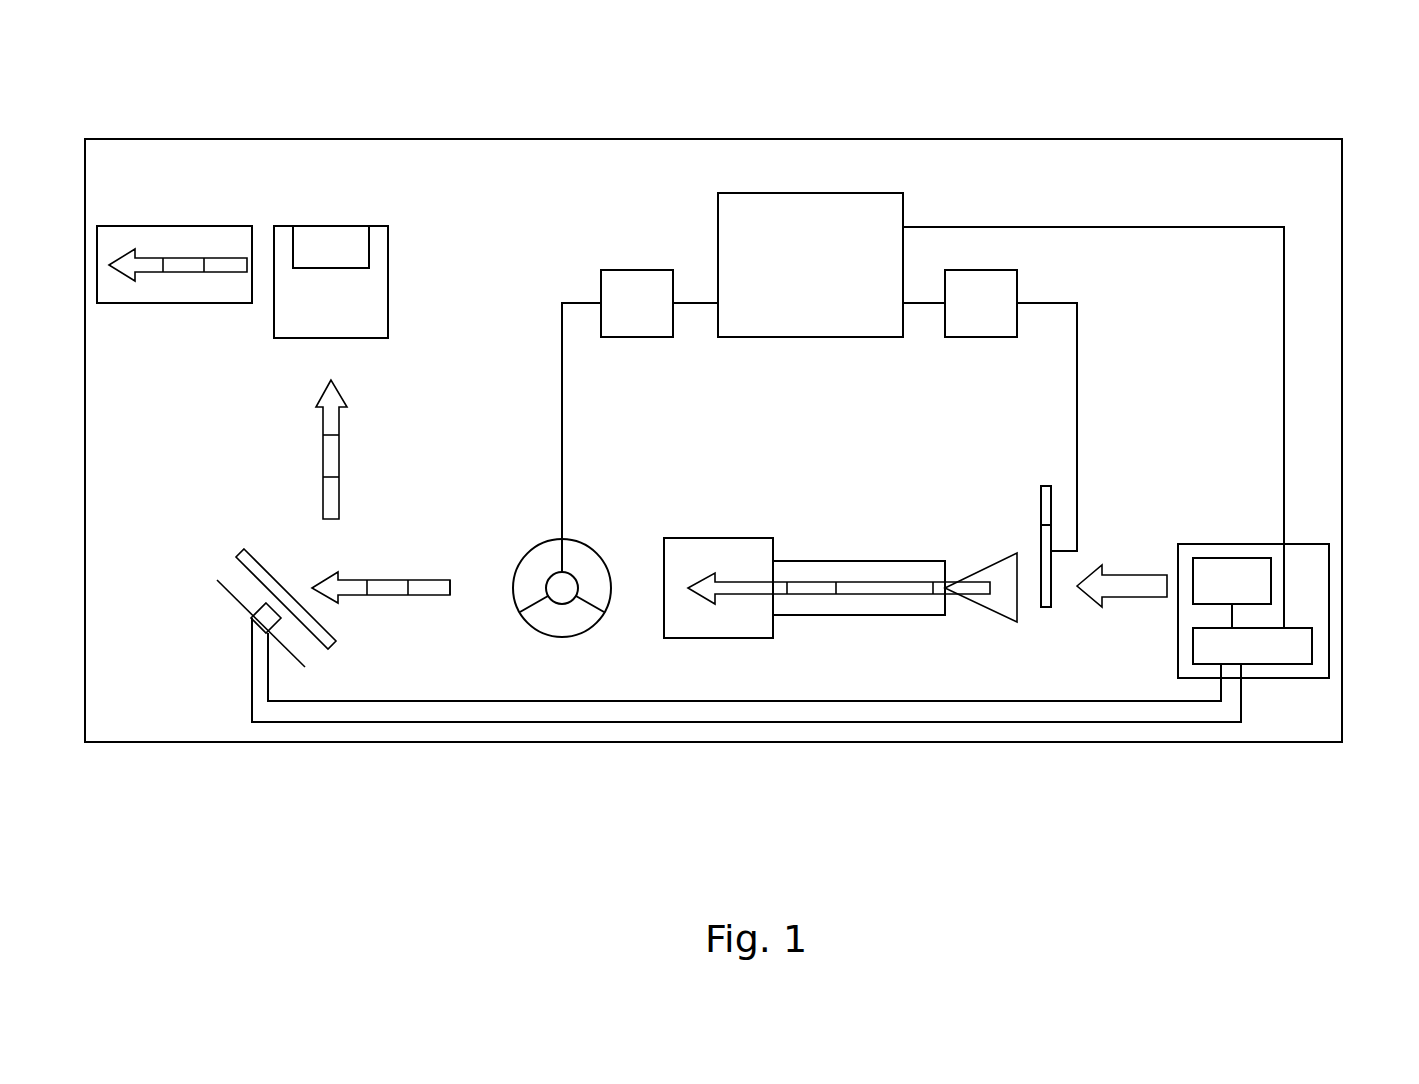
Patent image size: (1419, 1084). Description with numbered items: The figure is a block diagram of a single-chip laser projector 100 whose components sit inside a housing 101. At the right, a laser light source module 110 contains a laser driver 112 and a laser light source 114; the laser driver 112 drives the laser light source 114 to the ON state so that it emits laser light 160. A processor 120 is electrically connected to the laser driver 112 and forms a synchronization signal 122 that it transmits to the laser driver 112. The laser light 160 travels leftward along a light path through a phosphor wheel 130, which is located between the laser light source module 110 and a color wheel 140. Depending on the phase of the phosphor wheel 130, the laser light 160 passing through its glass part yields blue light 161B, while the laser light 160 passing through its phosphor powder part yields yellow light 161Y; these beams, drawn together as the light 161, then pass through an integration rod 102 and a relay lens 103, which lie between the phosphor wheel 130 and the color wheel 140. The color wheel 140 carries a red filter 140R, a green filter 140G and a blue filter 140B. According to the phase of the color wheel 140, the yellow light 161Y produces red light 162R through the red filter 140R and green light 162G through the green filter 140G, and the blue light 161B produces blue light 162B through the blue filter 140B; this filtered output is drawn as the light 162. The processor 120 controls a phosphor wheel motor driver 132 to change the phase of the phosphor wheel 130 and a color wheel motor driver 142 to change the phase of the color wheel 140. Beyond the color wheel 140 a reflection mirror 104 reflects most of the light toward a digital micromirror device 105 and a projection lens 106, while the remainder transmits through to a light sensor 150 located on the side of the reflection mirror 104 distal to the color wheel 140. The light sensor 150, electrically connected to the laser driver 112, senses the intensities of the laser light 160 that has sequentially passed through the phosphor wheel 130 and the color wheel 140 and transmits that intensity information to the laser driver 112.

The laser projector 100 is at (134, 68).
The housing 101 is at (618, 137).
The integration rod 102 is at (862, 565).
The relay lens 103 is at (718, 550).
The reflection mirror 104 is at (248, 552).
The digital micromirror device 105 is at (375, 298).
The projection lens 106 is at (190, 233).
The laser light source module 110 is at (1298, 584).
The laser driver 112 is at (1305, 640).
The laser light source 114 is at (1233, 565).
The processor 120 is at (718, 210).
The synchronization signal 122 is at (1097, 225).
The phosphor wheel 130 is at (1045, 600).
The phosphor wheel motor driver 132 is at (1008, 285).
The color wheel 140 is at (621, 698).
The red filter 140R is at (523, 587).
The blue filter 140B is at (568, 620).
The green filter 140G is at (597, 583).
The color wheel motor driver 142 is at (610, 285).
The light sensor 150 is at (262, 603).
The laser light 160 is at (1143, 578).
The illumination light beam 161 is at (883, 715).
The yellow light 161Y is at (743, 590).
The blue light 161B is at (812, 590).
The filtered light beam 162 is at (389, 714).
The red light 162R is at (353, 592).
The green light 162G is at (388, 592).
The blue light 162B is at (428, 592).